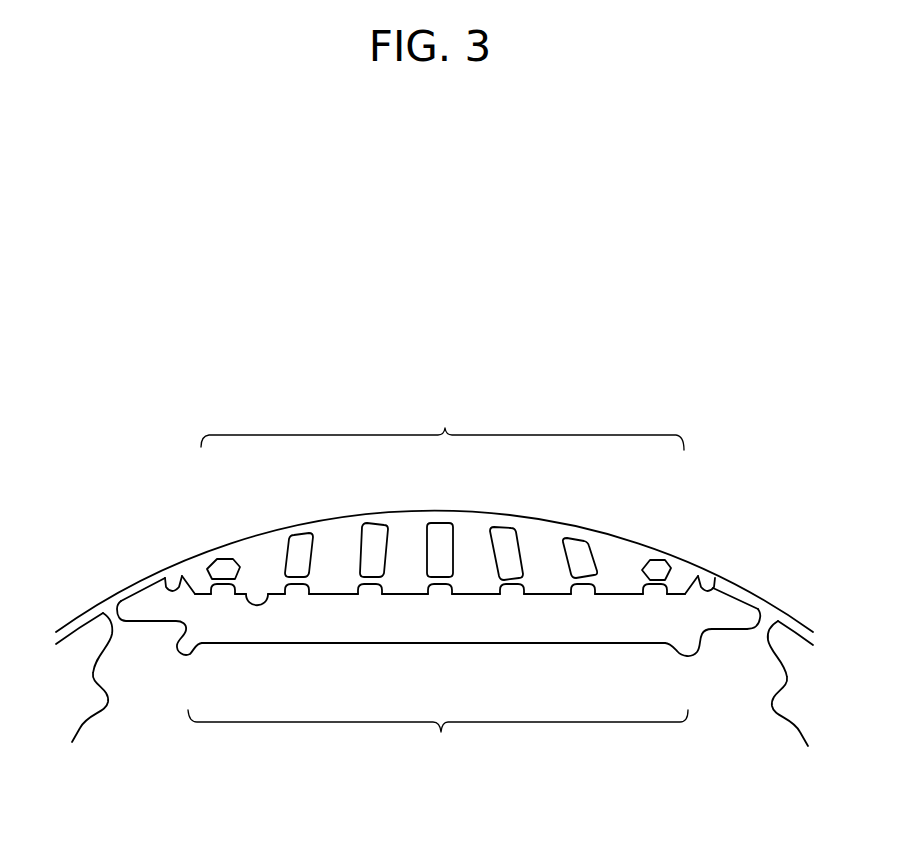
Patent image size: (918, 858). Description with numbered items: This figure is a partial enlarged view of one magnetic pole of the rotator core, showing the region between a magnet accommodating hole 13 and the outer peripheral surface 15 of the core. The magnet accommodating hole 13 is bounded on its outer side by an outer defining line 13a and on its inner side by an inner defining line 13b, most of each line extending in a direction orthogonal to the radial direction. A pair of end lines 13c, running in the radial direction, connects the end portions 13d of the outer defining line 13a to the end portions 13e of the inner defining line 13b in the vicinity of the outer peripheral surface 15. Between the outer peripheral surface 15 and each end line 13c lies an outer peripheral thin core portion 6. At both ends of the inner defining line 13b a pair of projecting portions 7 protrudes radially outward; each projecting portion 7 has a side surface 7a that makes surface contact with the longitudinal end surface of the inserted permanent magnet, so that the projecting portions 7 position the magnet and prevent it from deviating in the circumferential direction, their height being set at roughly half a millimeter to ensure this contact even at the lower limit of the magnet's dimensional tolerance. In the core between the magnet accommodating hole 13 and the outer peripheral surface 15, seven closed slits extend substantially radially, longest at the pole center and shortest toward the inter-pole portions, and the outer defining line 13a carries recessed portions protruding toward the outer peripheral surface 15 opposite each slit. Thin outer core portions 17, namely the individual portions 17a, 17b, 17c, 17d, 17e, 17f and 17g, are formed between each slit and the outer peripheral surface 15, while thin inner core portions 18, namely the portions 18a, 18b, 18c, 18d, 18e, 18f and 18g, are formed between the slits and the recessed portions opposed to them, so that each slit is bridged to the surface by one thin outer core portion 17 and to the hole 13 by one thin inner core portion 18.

The outer peripheral thin core portion 6 is at (152, 580).
The projecting portion 7 is at (715, 628).
The side surface of the projecting portion 7a is at (184, 633).
The magnet accommodating hole 13 is at (607, 618).
The outer defining line 13a is at (270, 594).
The inner defining line 13b is at (548, 643).
The end line 13c is at (178, 578).
The end portion of the outer defining line 13d is at (710, 577).
The end portion of the inner defining line 13e is at (752, 604).
The outer peripheral surface 15 is at (100, 604).
The thin outer core portions 17 is at (442, 424).
The thin outer core portion 17a is at (218, 557).
The thin outer core portion 17b is at (298, 535).
The thin outer core portion 17c is at (370, 525).
The thin outer core portion 17d is at (440, 523).
The thin outer core portion 17e is at (507, 527).
The thin outer core portion 17f is at (578, 538).
The thin outer core portion 17g is at (658, 560).
The thin inner core portions 18 is at (405, 421).
The thin inner core portion 18a is at (223, 585).
The thin inner core portion 18b is at (298, 585).
The thin inner core portion 18c is at (370, 585).
The thin inner core portion 18d is at (440, 585).
The thin inner core portion 18e is at (512, 585).
The thin inner core portion 18f is at (583, 585).
The thin inner core portion 18g is at (660, 585).